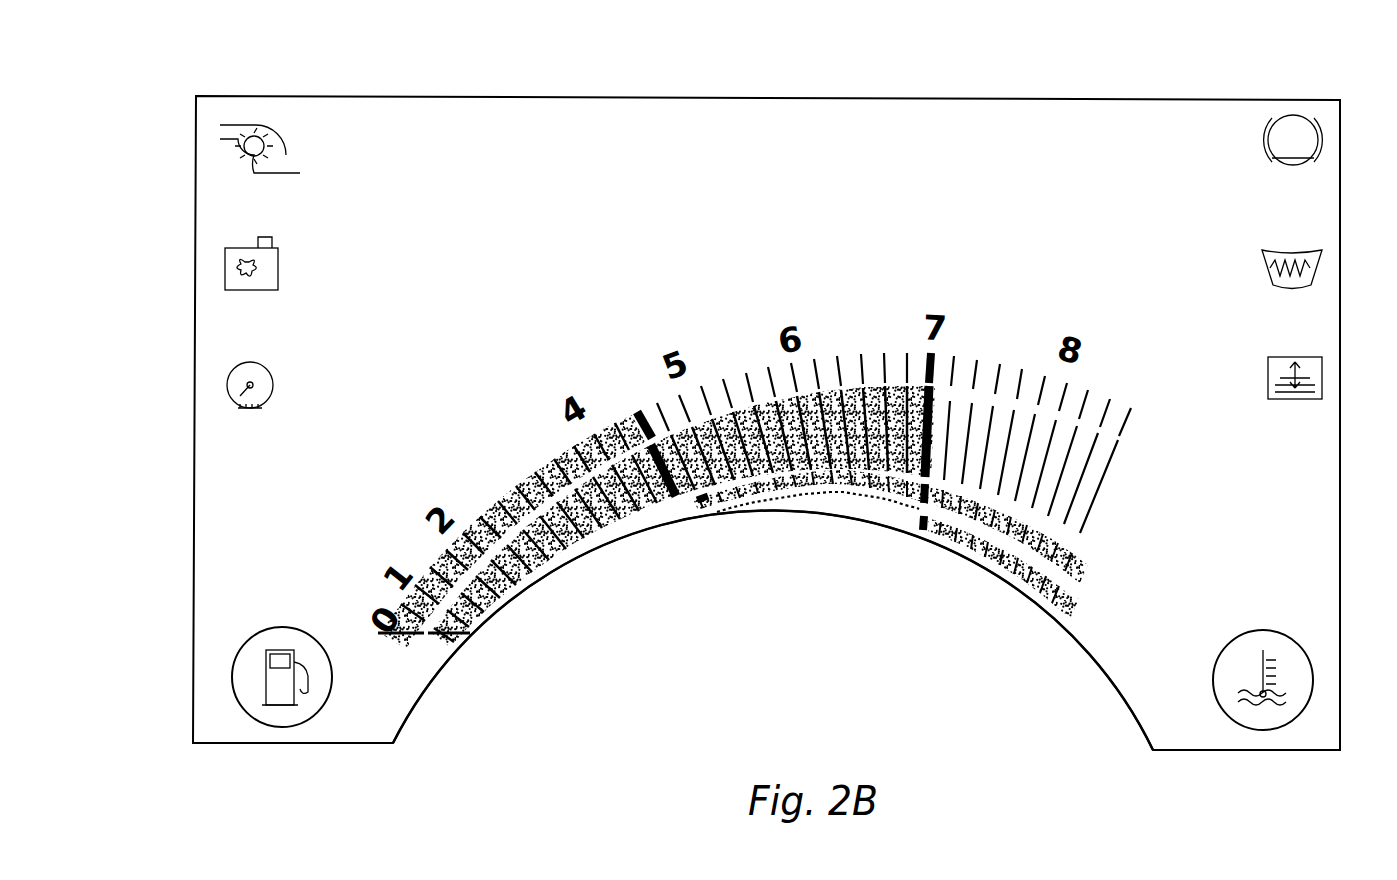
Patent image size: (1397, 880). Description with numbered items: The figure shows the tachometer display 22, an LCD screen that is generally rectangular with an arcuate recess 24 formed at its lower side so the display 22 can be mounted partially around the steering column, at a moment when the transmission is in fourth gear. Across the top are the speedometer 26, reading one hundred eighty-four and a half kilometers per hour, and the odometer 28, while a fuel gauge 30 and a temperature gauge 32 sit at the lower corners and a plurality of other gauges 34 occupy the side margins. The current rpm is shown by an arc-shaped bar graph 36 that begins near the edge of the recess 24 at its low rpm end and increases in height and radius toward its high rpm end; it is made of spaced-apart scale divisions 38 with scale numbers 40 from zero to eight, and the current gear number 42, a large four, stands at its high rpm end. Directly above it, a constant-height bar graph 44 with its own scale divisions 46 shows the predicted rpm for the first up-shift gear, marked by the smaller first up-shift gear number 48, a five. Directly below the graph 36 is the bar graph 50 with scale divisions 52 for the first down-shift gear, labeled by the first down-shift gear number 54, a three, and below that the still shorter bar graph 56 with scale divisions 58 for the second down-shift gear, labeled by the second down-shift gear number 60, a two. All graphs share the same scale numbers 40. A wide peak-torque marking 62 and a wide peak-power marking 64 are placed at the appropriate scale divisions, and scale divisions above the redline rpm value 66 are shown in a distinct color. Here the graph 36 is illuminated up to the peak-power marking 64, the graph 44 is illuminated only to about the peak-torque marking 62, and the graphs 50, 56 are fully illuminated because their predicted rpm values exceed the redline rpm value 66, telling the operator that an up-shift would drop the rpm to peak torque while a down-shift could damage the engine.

The display 22 is at (735, 655).
The arcuate recess 24 is at (425, 695).
The speedometer 26 is at (700, 172).
The odometer 28 is at (1025, 128).
The fuel gauge 30 is at (280, 726).
The temperature gauge 32 is at (1225, 705).
The other gauges 34 is at (278, 149).
The bar graph 36 is at (443, 640).
The scale divisions 38 is at (773, 530).
The scale numbers 40 is at (505, 452).
The current gear number 42 is at (1172, 520).
The bar graph 44 is at (400, 640).
The scale divisions 46 is at (754, 567).
The first up-shift gear number 48 is at (1180, 428).
The bar graph 50 is at (708, 506).
The scale divisions 52 is at (891, 526).
The first down-shift gear number 54 is at (1128, 592).
The bar graph 56 is at (838, 512).
The scale divisions 58 is at (1001, 593).
The second down-shift gear number 60 is at (1108, 636).
The peak-torque marking 62 is at (680, 500).
The peak-power marking 64 is at (918, 500).
The redline rpm value 66 is at (1030, 600).